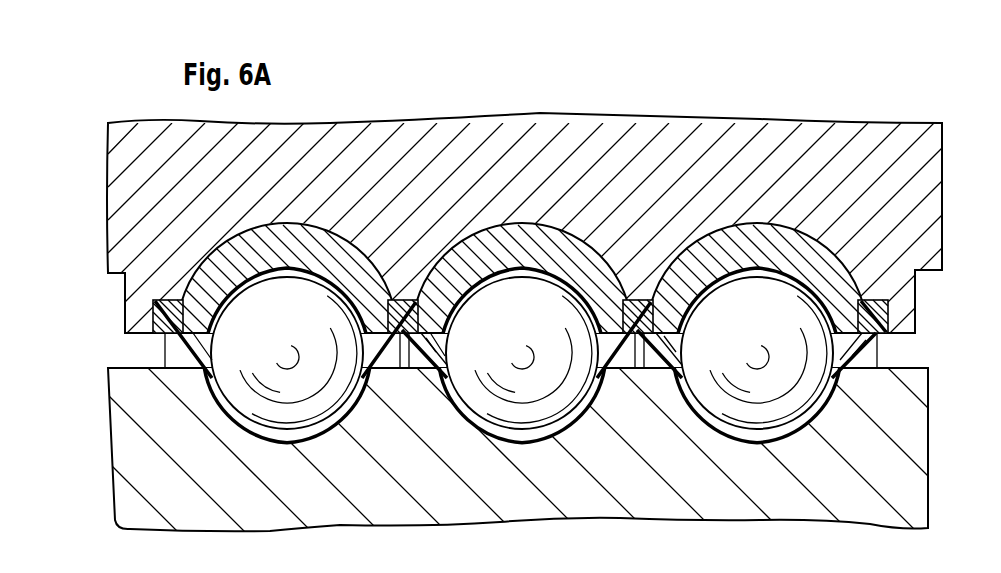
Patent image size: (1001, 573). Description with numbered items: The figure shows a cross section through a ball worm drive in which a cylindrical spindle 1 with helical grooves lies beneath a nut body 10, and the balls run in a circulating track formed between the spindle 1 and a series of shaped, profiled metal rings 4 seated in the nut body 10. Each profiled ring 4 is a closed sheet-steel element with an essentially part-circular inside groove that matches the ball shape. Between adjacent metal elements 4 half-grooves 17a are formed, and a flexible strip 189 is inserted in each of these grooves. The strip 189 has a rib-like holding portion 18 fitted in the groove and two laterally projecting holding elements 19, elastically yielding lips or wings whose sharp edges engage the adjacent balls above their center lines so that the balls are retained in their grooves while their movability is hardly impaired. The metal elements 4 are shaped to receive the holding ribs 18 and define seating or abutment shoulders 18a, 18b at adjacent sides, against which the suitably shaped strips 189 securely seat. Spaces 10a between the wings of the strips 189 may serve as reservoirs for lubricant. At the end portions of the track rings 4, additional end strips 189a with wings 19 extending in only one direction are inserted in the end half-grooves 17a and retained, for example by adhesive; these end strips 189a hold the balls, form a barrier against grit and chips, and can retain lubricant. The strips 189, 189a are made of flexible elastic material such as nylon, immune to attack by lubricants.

The spindle 1 is at (913, 433).
The profiled ring 4 is at (518, 256).
The nut body 10 is at (704, 136).
The spaces 10a is at (405, 358).
The half-grooves 17a is at (378, 296).
The holding portion 18 is at (427, 310).
The abutment shoulder 18a is at (405, 298).
The abutment shoulder 18b is at (587, 322).
The holding elements 19 is at (180, 362).
The flexible strip 189 is at (598, 334).
The end strip 189a is at (156, 345).